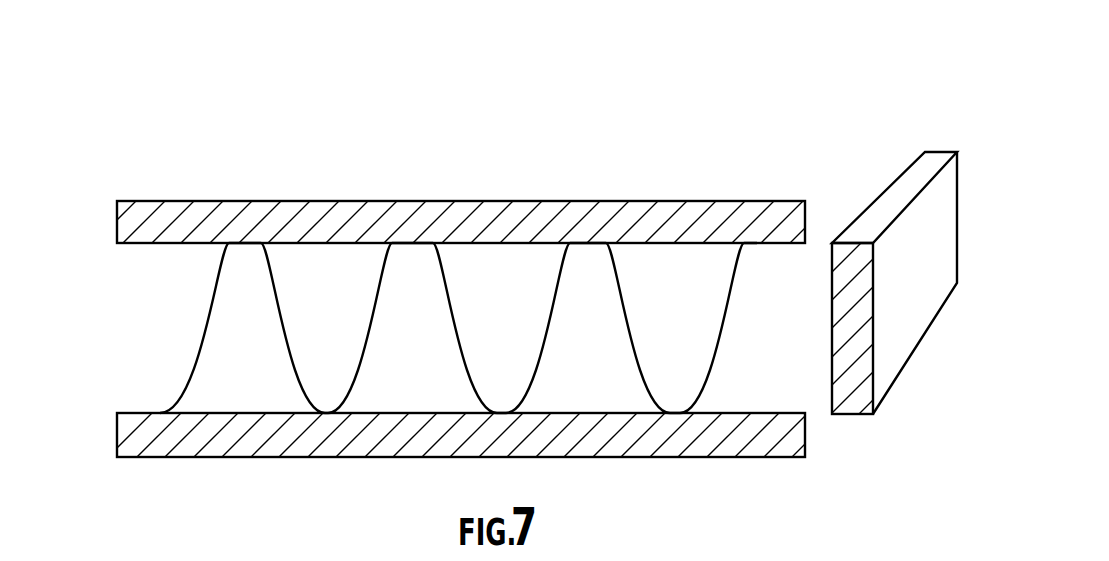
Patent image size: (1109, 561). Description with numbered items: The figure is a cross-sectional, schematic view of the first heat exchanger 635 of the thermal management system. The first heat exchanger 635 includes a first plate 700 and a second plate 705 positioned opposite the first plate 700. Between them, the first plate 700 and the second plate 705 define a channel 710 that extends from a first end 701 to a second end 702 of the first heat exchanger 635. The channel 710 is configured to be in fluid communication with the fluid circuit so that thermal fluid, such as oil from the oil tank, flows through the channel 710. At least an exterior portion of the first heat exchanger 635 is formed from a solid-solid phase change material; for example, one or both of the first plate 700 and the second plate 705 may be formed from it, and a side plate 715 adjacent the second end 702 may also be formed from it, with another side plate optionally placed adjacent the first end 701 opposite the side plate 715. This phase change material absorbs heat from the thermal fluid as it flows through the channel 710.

The first heat exchanger 635 is at (502, 271).
The first plate 700 is at (293, 212).
The first end 701 is at (439, 324).
The second end 702 is at (897, 313).
The second plate 705 is at (587, 440).
The channel 710 is at (512, 298).
The side plate 715 is at (917, 227).